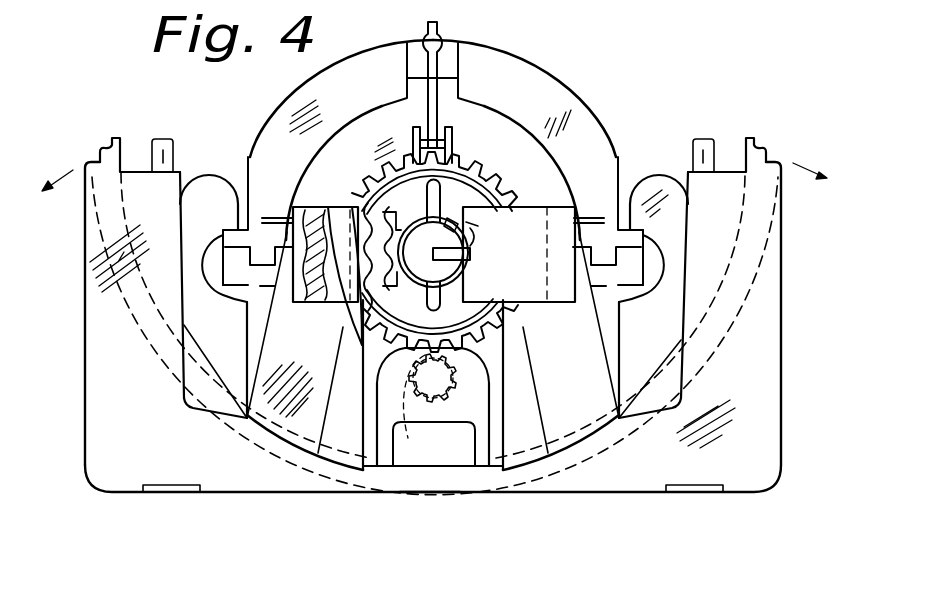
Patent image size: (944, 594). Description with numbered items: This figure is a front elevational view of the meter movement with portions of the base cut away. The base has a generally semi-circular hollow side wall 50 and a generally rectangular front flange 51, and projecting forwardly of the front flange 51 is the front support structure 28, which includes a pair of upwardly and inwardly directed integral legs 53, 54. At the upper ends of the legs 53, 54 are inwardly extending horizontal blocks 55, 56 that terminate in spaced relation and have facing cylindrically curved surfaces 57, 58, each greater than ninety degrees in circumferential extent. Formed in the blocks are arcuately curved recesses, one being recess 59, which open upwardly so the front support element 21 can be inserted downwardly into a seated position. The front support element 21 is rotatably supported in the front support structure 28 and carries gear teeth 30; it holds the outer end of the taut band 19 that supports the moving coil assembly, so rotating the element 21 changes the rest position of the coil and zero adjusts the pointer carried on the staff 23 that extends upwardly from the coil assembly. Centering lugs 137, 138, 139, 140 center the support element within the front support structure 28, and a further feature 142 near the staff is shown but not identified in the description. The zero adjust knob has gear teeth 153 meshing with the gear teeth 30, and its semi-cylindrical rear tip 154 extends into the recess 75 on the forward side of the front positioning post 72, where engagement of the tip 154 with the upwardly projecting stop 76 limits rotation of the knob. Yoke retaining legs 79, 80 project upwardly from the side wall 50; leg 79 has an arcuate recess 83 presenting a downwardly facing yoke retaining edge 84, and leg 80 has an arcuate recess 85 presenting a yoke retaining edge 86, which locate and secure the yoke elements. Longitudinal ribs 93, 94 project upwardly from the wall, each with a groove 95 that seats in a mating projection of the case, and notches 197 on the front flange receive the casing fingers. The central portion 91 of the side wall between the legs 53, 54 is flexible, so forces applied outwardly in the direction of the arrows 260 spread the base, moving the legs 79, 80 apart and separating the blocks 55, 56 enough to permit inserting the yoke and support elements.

The taut band 19 is at (432, 250).
The front support element 21 is at (469, 143).
The staff 23 is at (440, 63).
The front support structure 28 is at (563, 205).
The gear teeth 30 is at (346, 180).
The side wall 50 is at (165, 383).
The front flange 51 is at (100, 437).
The leg 53 is at (295, 432).
The leg 54 is at (540, 433).
The block 55 is at (302, 176).
The block 56 is at (534, 215).
The cylindrically curved surface 57 is at (470, 237).
The cylindrically curved surface 58 is at (440, 306).
The recess 59 is at (330, 205).
The front positioning post 72 is at (482, 453).
The recess 75 is at (460, 392).
The stop 76 is at (430, 402).
The yoke retaining leg 79 is at (200, 180).
The yoke retaining leg 80 is at (648, 178).
The arcuate recess 83 is at (212, 284).
The yoke retaining edge 84 is at (220, 238).
The arcuate recess 85 is at (665, 263).
The yoke retaining edge 86 is at (677, 233).
The central portion 91 is at (426, 495).
The longitudinal rib 93 is at (110, 140).
The longitudinal rib 94 is at (751, 136).
The groove 95 is at (99, 152).
The centering lug 137 is at (397, 296).
The centering lug 138 is at (427, 212).
The centering lug 139 is at (457, 223).
The centering lug 140 is at (457, 283).
The key bar 142 is at (470, 257).
The gear teeth 153 is at (400, 385).
The semi-cylindrical rear tip 154 is at (405, 431).
The notches 197 is at (690, 494).
The arrows 260 is at (435, 191).